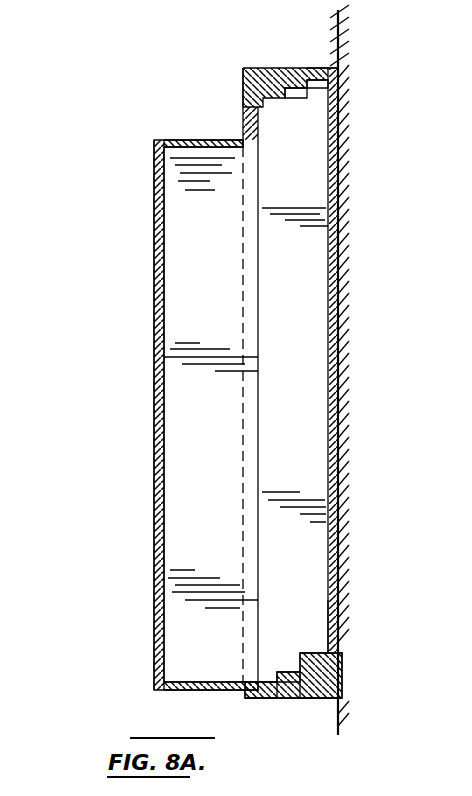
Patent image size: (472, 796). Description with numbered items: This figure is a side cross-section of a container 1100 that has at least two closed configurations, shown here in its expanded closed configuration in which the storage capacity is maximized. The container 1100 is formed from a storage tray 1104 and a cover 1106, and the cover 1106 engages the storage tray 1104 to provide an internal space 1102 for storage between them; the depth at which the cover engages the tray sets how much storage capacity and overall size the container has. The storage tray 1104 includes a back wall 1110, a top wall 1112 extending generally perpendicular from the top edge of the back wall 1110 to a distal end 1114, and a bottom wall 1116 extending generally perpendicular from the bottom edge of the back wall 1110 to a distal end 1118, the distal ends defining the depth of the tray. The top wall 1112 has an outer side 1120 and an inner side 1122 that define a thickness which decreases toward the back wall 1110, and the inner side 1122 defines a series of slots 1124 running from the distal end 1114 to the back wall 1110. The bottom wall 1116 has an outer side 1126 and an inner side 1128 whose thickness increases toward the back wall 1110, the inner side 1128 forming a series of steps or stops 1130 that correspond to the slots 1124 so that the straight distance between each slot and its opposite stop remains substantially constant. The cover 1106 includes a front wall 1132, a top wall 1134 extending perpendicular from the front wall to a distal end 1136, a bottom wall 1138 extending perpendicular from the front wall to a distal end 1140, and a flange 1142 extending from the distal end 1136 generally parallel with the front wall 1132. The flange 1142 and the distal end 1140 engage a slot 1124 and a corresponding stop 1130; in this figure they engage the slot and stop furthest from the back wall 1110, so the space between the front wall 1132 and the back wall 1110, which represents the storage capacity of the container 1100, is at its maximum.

The container 1100 is at (180, 85).
The internal space 1102 is at (297, 290).
The storage tray 1104 is at (343, 657).
The cover 1106 is at (152, 490).
The back wall 1110 is at (340, 345).
The top wall 1112 is at (283, 68).
The distal end 1114 is at (241, 80).
The bottom wall 1116 is at (344, 683).
The distal end 1118 is at (248, 694).
The outer side 1120 is at (308, 68).
The inner side 1122 is at (292, 88).
The slots 1124 is at (268, 95).
The outer side 1126 is at (316, 704).
The inner side 1128 is at (350, 605).
The steps or stops 1130 is at (284, 672).
The front wall 1132 is at (156, 372).
The top wall 1134 is at (167, 140).
The distal end 1136 is at (258, 143).
The bottom wall 1138 is at (190, 682).
The distal end 1140 is at (256, 677).
The flange 1142 is at (243, 134).